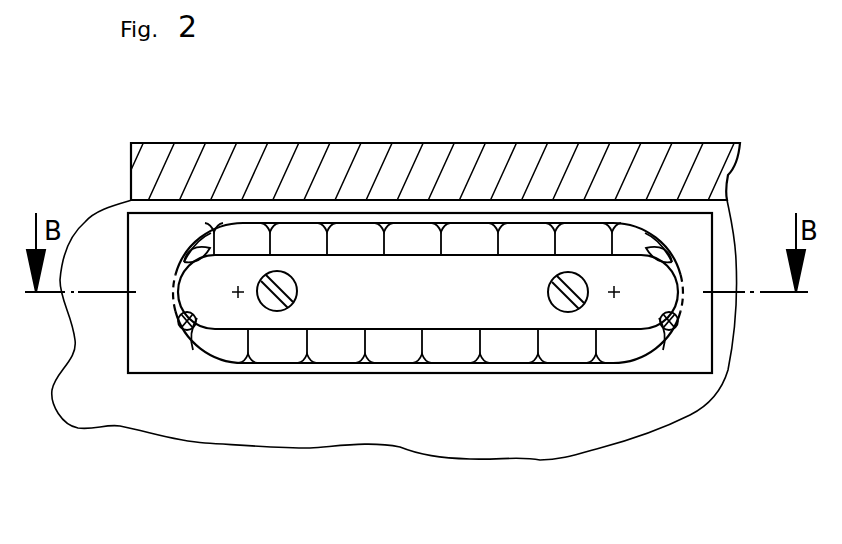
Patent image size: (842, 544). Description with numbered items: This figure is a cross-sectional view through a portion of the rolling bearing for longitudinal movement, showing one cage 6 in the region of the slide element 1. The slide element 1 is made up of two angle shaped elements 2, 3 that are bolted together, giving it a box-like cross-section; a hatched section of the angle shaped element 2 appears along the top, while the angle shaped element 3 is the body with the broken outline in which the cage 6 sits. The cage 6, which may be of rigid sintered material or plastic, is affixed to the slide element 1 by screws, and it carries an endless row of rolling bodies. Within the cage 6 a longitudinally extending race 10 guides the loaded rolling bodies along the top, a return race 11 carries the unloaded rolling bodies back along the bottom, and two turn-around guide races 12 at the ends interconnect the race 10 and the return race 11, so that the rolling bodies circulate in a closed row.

The slide element 1 is at (441, 127).
The angle shaped element 2 is at (617, 160).
The angle shaped element 3 is at (664, 413).
The cage 6 is at (444, 203).
The race 10 is at (365, 242).
The return race 11 is at (337, 352).
The turn-around guide race 12 is at (187, 290).